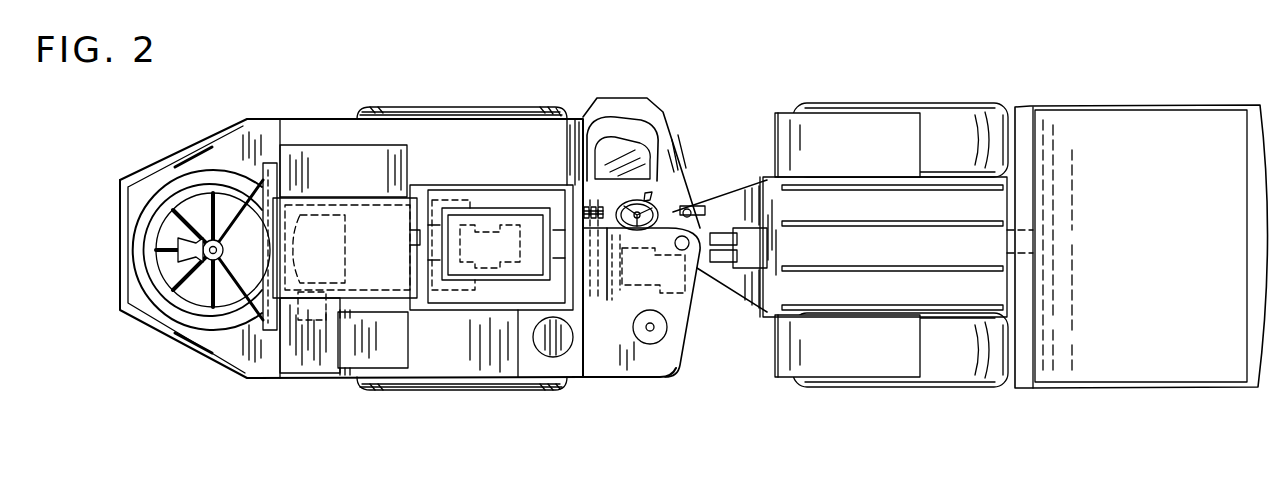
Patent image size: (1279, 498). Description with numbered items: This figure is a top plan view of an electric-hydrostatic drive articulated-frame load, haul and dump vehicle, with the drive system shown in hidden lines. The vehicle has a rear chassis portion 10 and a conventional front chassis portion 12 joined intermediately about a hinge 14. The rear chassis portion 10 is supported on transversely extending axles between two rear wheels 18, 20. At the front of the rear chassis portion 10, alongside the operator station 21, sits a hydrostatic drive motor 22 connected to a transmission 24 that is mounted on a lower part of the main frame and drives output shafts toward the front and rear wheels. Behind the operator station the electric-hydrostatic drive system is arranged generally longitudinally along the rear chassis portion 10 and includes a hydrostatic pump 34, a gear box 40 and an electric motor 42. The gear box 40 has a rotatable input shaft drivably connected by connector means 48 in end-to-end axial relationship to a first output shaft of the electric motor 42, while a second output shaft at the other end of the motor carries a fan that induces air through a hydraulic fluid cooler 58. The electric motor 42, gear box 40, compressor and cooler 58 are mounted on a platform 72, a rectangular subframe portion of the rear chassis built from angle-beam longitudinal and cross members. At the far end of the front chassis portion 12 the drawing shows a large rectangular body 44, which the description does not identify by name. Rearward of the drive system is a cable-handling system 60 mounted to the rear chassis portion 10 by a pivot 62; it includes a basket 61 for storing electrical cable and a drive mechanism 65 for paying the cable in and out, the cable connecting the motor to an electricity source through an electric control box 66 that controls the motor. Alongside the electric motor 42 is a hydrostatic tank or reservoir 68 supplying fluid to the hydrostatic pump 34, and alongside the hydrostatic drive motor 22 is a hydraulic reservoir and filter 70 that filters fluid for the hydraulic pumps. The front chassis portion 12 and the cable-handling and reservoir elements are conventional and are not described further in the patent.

The rear chassis portion 10 is at (396, 258).
The front chassis portion 12 is at (1014, 264).
The hinge 14 is at (710, 196).
The rear wheel 18 is at (437, 391).
The rear wheel 20 is at (450, 107).
The operator station 21 is at (665, 86).
The hydrostatic drive motor 22 is at (683, 337).
The transmission 24 is at (607, 302).
The hydrostatic pump 34 is at (510, 220).
The gear box 40 is at (480, 222).
The electric motor 42 is at (343, 205).
The cargo box 44 is at (1143, 106).
The connector means 48 is at (433, 190).
The hydraulic fluid cooler 58 is at (247, 206).
The cable-handling system 60 is at (193, 216).
The basket 61 is at (165, 272).
The pivot 62 is at (221, 252).
The drive mechanism 65 is at (180, 239).
The electric control box 66 is at (302, 145).
The hydrostatic tank or reservoir 68 is at (355, 380).
The hydraulic reservoir and filter 70 is at (650, 345).
The platform 72 is at (323, 197).